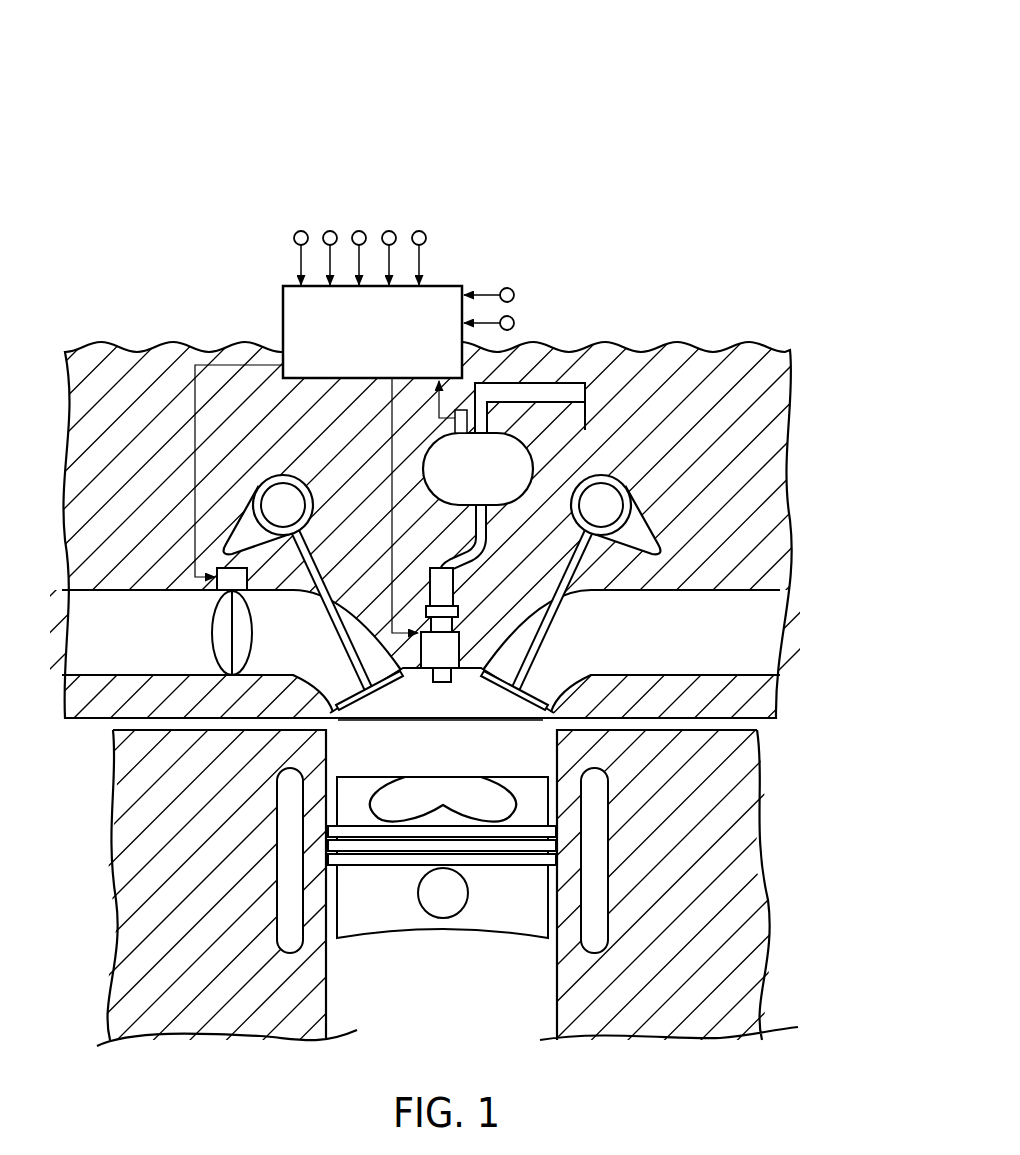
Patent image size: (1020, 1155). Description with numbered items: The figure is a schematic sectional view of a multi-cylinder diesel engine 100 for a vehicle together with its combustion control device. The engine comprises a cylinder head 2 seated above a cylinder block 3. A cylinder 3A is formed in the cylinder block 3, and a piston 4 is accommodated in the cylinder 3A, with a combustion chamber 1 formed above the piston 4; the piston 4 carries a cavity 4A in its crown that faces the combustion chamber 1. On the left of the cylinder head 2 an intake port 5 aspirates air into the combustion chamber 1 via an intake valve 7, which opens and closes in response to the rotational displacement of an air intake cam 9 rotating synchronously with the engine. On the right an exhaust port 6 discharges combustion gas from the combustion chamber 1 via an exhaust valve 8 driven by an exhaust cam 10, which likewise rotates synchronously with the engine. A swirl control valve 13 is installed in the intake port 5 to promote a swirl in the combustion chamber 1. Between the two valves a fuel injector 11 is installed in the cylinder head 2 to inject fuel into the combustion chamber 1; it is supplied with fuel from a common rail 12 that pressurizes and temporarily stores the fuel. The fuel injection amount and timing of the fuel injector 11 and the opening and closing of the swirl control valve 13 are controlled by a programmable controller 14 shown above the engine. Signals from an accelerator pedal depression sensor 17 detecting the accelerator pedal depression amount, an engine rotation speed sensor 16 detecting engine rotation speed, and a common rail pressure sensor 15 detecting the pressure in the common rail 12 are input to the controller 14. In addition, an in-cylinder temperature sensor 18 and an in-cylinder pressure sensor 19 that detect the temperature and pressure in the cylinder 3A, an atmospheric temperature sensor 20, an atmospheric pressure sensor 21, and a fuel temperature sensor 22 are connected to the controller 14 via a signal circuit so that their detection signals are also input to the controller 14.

The multi-cylinder diesel engine 100 is at (510, 691).
The combustion chamber 1 is at (444, 747).
The cylinder head 2 is at (694, 701).
The cylinder block 3 is at (447, 888).
The cylinder 3A is at (327, 975).
The piston 4 is at (442, 868).
The cavity 4A is at (427, 806).
The intake port 5 is at (107, 657).
The exhaust port 6 is at (735, 651).
The intake valve 7 is at (318, 558).
The exhaust valve 8 is at (572, 557).
The air intake cam 9 is at (288, 476).
The exhaust cam 10 is at (603, 477).
The fuel injector 11 is at (460, 624).
The common rail 12 is at (533, 446).
The swirl control valve 13 is at (213, 624).
The programmable controller 14 is at (283, 296).
The common rail pressure sensor 15 is at (463, 410).
The engine rotation speed sensor 16 is at (507, 288).
The accelerator pedal depression sensor 17 is at (507, 316).
The in-cylinder temperature sensor 18 is at (419, 231).
The in-cylinder pressure sensor 19 is at (389, 231).
The atmospheric temperature sensor 20 is at (359, 231).
The atmospheric pressure sensor 21 is at (330, 231).
The fuel temperature sensor 22 is at (301, 231).